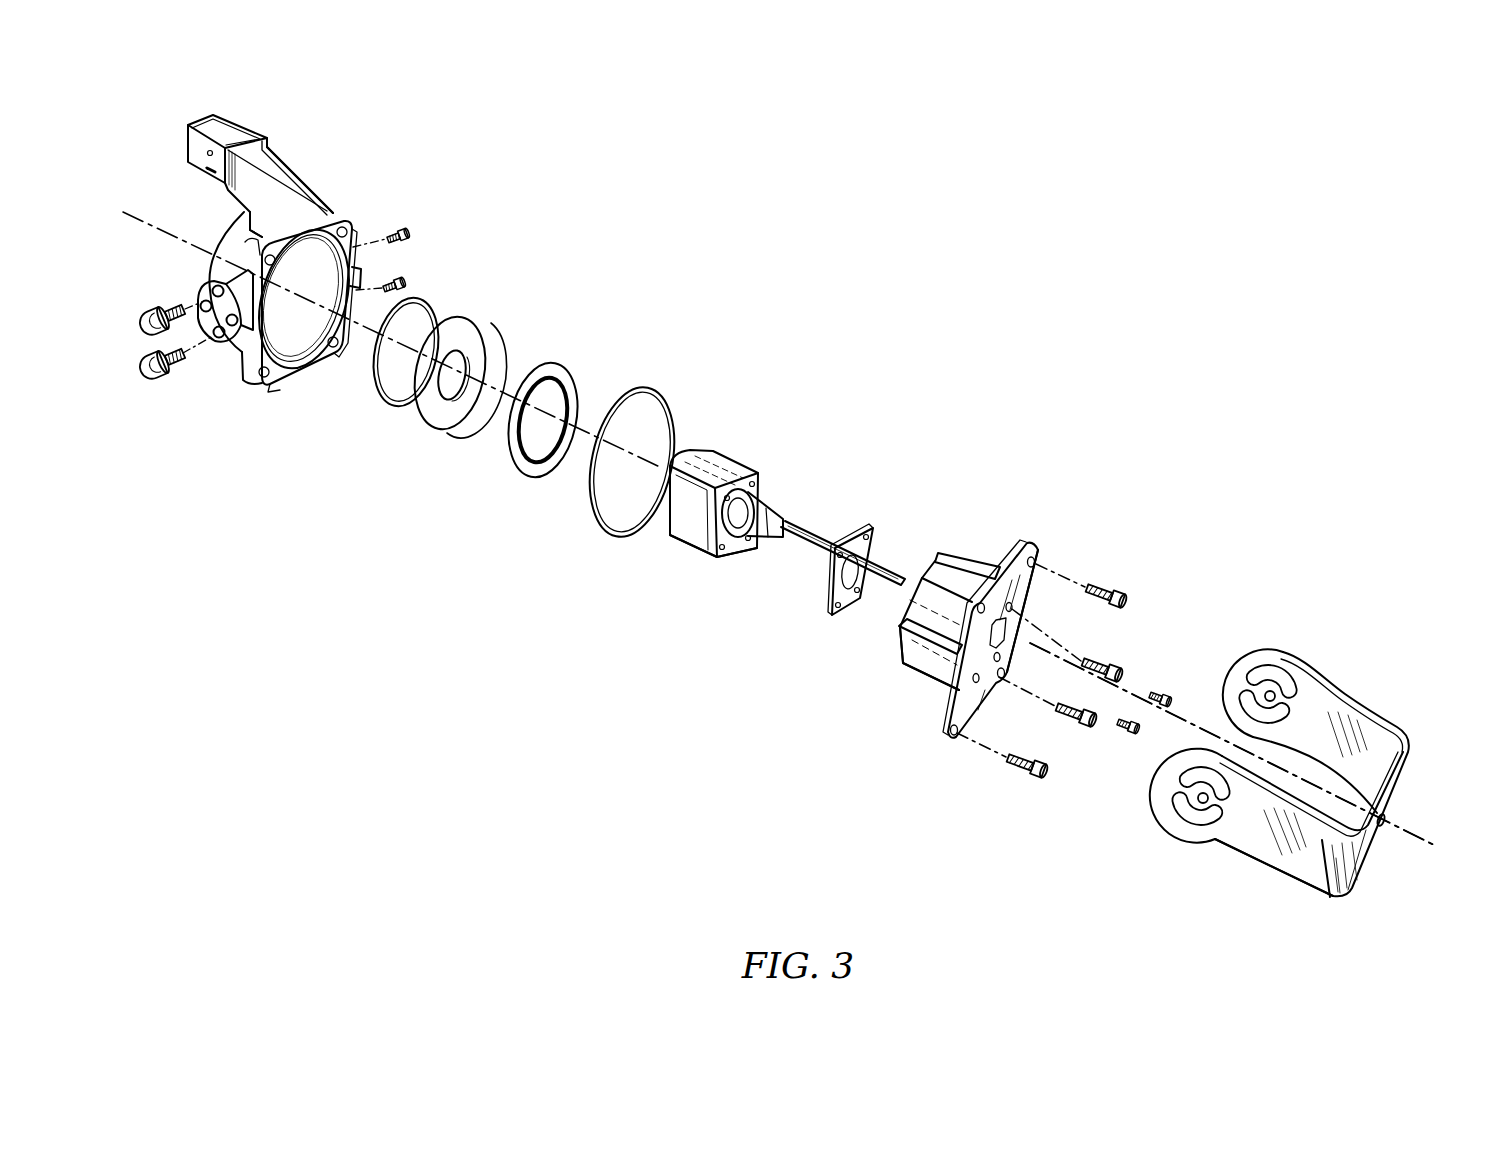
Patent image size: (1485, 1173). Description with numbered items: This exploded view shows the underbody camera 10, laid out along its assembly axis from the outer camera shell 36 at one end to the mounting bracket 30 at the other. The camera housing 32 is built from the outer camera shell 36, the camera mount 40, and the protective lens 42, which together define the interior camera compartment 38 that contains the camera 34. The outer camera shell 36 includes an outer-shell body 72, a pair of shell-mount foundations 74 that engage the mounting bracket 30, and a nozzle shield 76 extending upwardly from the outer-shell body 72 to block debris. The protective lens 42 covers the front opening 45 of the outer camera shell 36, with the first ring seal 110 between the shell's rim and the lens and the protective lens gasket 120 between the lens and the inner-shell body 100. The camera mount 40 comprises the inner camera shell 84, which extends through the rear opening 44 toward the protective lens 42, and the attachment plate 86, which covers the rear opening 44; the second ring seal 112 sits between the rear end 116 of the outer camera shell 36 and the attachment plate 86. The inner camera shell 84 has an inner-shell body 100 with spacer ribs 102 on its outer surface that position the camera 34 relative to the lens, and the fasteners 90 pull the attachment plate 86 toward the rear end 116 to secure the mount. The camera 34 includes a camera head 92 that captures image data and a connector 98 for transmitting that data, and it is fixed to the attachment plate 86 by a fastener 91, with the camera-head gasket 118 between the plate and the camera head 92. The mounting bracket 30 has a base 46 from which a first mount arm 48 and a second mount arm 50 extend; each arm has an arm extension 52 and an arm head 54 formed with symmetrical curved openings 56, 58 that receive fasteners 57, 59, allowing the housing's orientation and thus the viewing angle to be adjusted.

The underbody camera 10 is at (1200, 250).
The mounting bracket 30 is at (1340, 656).
The camera housing 32 is at (1057, 467).
The camera 34 is at (730, 447).
The outer camera shell 36 is at (330, 190).
The interior camera compartment 38 is at (347, 215).
The camera mount 40 is at (985, 538).
The protective lens 42 is at (485, 318).
The rear opening 44 is at (300, 350).
The front opening 45 is at (230, 228).
The base 46 is at (1377, 835).
The first mount arm 48 is at (1354, 699).
The second mount arm 50 is at (1268, 874).
The arm extension 52 is at (1383, 745).
The arm head 54 is at (1270, 652).
The curved opening 56 is at (1258, 672).
The fastener 57 is at (146, 315).
The curved opening 58 is at (1268, 722).
The fastener 59 is at (146, 373).
The outer-shell body 72 is at (237, 373).
The shell-mount foundations 74 is at (213, 352).
The nozzle shield 76 is at (218, 108).
The inner camera shell 84 is at (944, 540).
The attachment plate 86 is at (957, 742).
The fasteners 90 is at (1037, 785).
The fastener 91 is at (1157, 688).
The camera head 92 is at (676, 520).
The connector 98 is at (792, 552).
The inner-shell body 100 is at (919, 662).
The spacer ribs 102 is at (910, 650).
The first ring seal 110 is at (377, 405).
The second ring seal 112 is at (594, 537).
The rear end 116 is at (268, 392).
The camera-head gasket 118 is at (830, 615).
The protective lens gasket 120 is at (507, 470).